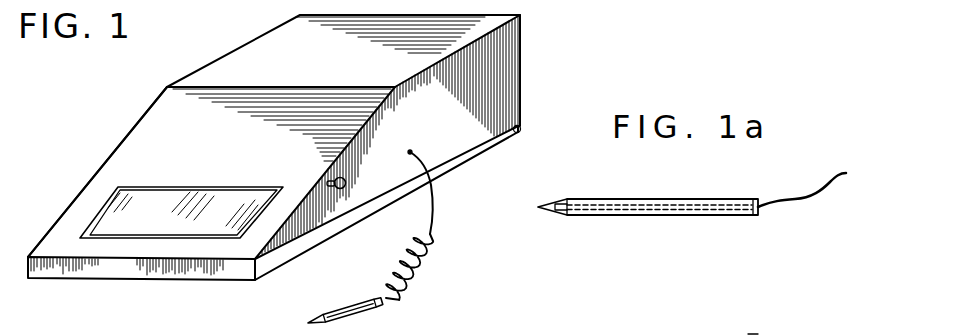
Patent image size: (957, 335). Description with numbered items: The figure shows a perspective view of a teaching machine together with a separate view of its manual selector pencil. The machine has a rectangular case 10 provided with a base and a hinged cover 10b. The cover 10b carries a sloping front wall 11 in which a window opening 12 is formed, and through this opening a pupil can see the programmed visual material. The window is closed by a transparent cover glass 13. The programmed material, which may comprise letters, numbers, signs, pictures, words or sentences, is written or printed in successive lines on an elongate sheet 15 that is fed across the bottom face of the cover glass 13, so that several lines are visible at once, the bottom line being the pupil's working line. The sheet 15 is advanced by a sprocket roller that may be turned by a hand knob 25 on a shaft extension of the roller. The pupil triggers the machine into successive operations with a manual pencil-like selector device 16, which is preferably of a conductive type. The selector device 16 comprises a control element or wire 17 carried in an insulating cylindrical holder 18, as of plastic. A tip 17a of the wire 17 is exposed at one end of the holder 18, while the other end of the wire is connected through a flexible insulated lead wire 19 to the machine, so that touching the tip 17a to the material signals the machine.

In FIG. 1, the rectangular case 10 is at (528, 76).
In FIG. 1, the hinged cover 10b is at (500, 14).
In FIG. 1, the sloping front wall 11 is at (152, 131).
In FIG. 1, the window opening 12 is at (207, 189).
In FIG. 1, the transparent cover glass 13 is at (250, 186).
In FIG. 1a, the elongate sheet 15 is at (753, 334).
In FIG. 1, the manual pencil-like selector device 16 is at (346, 303).
In FIG. 1a, the manual pencil-like selector device 16 is at (674, 186).
In FIG. 1a, the control element or wire 17 is at (600, 217).
In FIG. 1a, the tip of the wire 17a is at (572, 175).
In FIG. 1a, the insulating cylindrical holder 18 is at (672, 217).
In FIG. 1, the flexible insulated lead wire 19 is at (431, 245).
In FIG. 1a, the flexible insulated lead wire 19 is at (822, 184).
In FIG. 1, the hand knob 25 is at (343, 190).